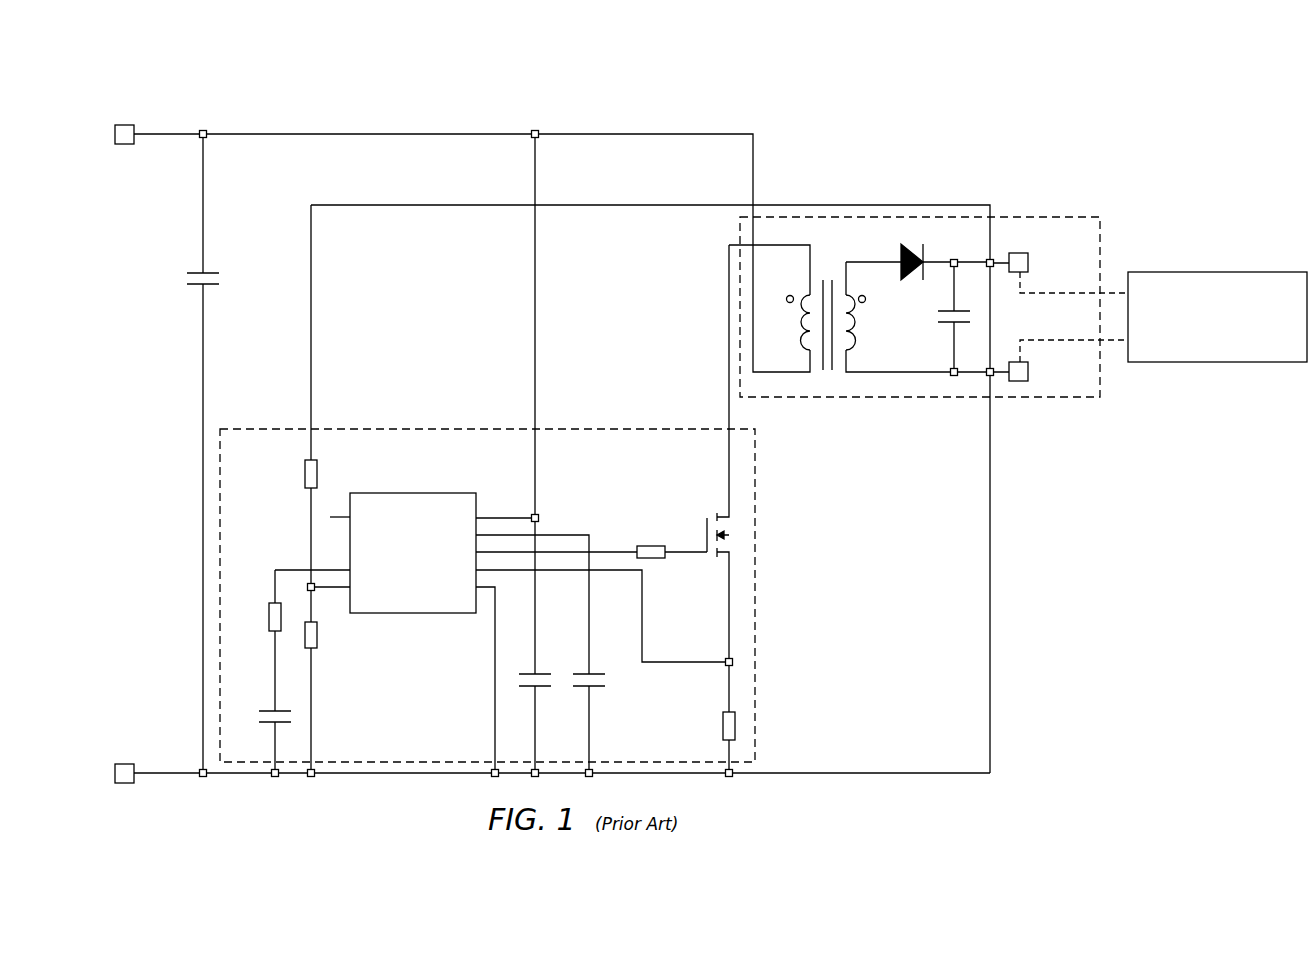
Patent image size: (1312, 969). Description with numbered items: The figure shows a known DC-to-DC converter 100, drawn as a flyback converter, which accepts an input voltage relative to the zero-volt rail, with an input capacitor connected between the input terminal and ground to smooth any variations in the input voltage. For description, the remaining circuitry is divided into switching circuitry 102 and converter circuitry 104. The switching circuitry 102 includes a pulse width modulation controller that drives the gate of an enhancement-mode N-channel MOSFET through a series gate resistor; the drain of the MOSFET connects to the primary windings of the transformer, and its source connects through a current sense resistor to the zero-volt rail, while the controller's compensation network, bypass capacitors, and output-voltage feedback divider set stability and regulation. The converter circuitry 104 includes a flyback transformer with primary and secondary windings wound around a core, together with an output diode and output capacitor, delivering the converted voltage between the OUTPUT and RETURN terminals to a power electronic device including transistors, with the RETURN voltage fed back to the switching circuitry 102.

The converter 100 is at (931, 167).
The switching circuitry 102 is at (756, 449).
The converter circuitry 104 is at (739, 240).